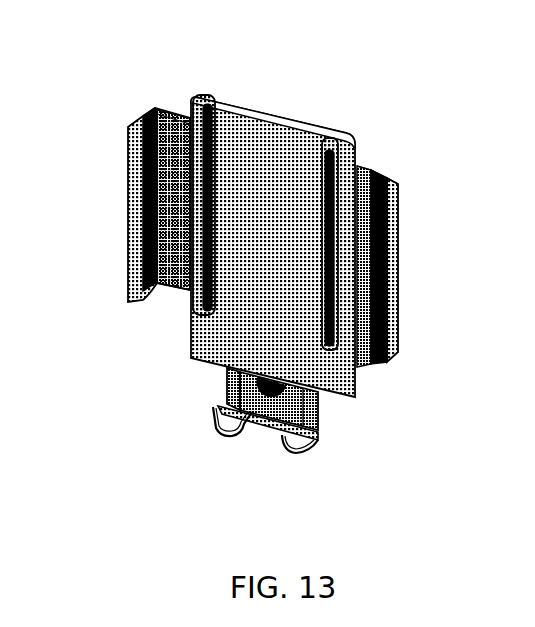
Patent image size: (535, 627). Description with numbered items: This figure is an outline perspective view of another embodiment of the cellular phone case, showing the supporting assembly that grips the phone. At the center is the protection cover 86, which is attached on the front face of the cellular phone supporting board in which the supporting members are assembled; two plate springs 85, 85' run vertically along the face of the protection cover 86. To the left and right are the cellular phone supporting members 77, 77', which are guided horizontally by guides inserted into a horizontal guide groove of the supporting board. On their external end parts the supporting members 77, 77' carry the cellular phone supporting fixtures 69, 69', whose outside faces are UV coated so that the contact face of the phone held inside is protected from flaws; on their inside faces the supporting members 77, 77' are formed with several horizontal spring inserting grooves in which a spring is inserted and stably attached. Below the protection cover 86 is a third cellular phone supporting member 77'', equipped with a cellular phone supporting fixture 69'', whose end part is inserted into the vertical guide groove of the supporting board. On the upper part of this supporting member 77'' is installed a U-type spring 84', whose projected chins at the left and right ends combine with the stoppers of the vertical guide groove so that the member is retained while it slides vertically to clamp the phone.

The cellular phone supporting fixture 69 is at (117, 205).
The cellular phone supporting fixture 69' is at (426, 263).
The cellular phone supporting fixture 69'' is at (313, 493).
The cellular phone supporting member 77 is at (127, 164).
The cellular phone supporting member 77' is at (420, 232).
The cellular phone supporting member 77'' is at (297, 457).
The U-type spring 84' is at (268, 443).
The plate spring 85 is at (191, 165).
The plate spring 85' is at (353, 196).
The protection cover 86 is at (276, 152).